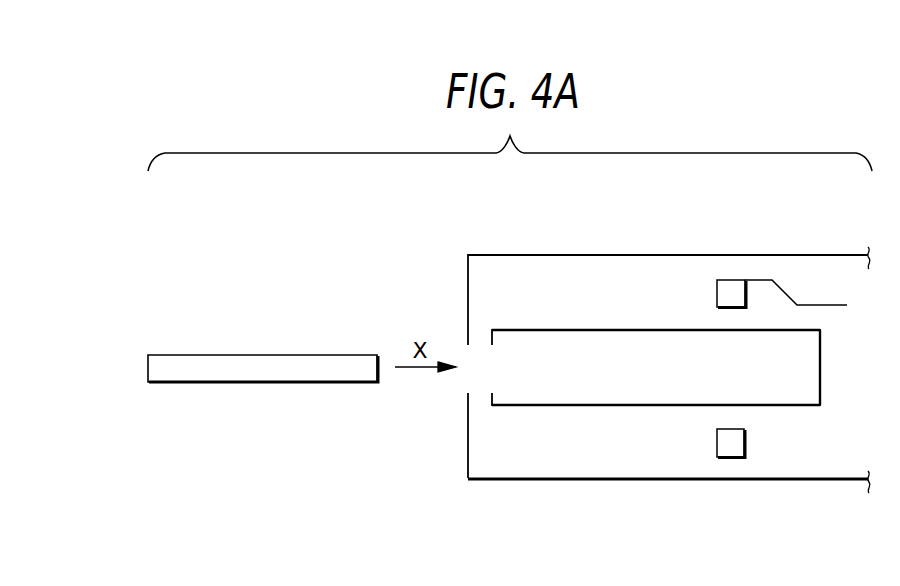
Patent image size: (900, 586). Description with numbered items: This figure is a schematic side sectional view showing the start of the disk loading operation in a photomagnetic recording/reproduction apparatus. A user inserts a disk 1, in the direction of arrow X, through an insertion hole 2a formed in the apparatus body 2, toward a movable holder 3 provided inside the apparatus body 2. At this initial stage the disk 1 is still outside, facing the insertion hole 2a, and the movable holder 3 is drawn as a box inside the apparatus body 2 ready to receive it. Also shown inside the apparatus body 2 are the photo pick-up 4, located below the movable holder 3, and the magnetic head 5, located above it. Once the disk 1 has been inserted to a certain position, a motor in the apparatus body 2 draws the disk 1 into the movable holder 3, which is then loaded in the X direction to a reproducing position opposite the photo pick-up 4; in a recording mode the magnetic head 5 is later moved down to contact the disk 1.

The disk 1 is at (255, 355).
The apparatus body 2 is at (668, 255).
The insertion hole 2a is at (467, 343).
The movable holder 3 is at (535, 330).
The photo pick-up 4 is at (717, 444).
The magnetic head 5 is at (717, 295).